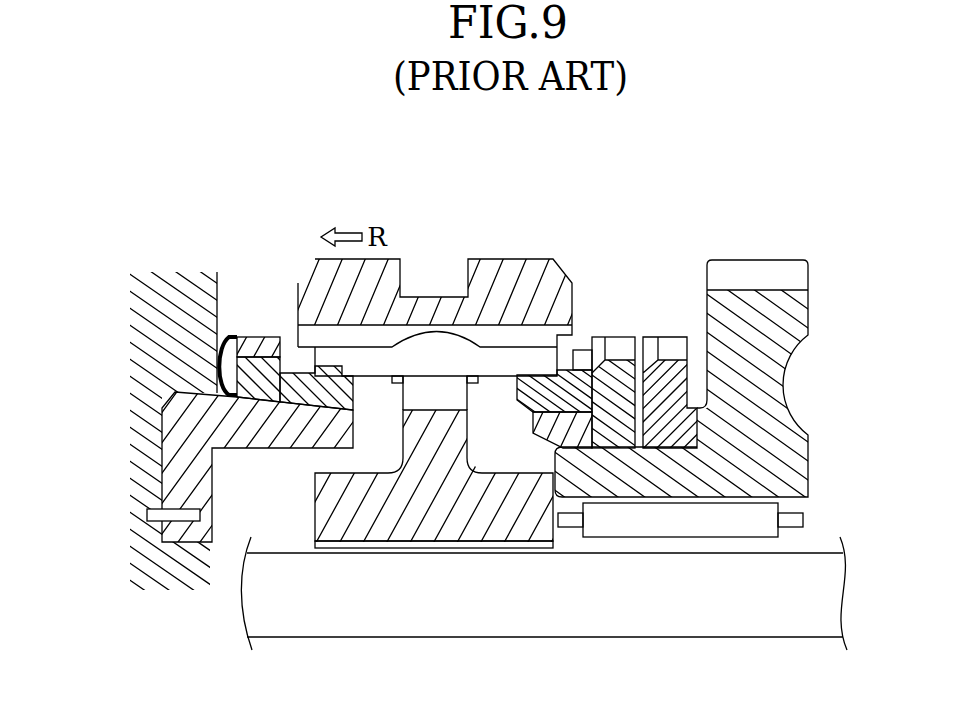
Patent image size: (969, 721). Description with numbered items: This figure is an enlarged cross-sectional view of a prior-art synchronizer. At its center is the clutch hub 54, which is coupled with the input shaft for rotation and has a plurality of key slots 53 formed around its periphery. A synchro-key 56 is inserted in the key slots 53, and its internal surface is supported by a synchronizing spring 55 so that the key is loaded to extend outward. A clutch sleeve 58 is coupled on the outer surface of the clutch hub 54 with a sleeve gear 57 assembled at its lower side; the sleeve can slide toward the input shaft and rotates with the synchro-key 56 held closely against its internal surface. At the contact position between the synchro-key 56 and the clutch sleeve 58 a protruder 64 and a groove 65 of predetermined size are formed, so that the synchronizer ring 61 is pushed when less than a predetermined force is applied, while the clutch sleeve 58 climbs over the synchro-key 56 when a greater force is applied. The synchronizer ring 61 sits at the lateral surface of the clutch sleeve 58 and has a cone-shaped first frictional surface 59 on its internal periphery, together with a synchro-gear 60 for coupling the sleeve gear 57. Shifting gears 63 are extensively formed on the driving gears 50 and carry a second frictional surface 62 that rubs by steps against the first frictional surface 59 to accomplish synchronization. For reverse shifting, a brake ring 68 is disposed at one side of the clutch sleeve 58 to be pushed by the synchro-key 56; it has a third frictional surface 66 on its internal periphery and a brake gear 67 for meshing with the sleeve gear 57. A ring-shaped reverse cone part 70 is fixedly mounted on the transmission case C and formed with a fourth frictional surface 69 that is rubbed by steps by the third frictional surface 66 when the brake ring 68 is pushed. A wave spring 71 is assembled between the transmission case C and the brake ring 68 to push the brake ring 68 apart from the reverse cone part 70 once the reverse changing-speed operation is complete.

The driving gear 50 is at (768, 320).
The key slot 53 is at (433, 400).
The clutch hub 54 is at (443, 502).
The synchronizing spring 55 is at (490, 374).
The synchro-key 56 is at (414, 362).
The sleeve gear 57 is at (582, 350).
The clutch sleeve 58 is at (358, 292).
The first frictional surface 59 is at (578, 387).
The synchro-gear 60 is at (623, 345).
The synchronizer ring 61 is at (653, 427).
The second frictional surface 62 is at (582, 387).
The shifting gear 63 is at (672, 345).
The protruder 64 is at (438, 337).
The groove 65 is at (423, 338).
The third frictional surface 66 is at (292, 375).
The brake gear 67 is at (262, 383).
The brake ring 68 is at (245, 338).
The fourth frictional surface 69 is at (270, 404).
The reverse cone part 70 is at (275, 427).
The wave spring 71 is at (217, 372).
The transmission case C is at (143, 403).